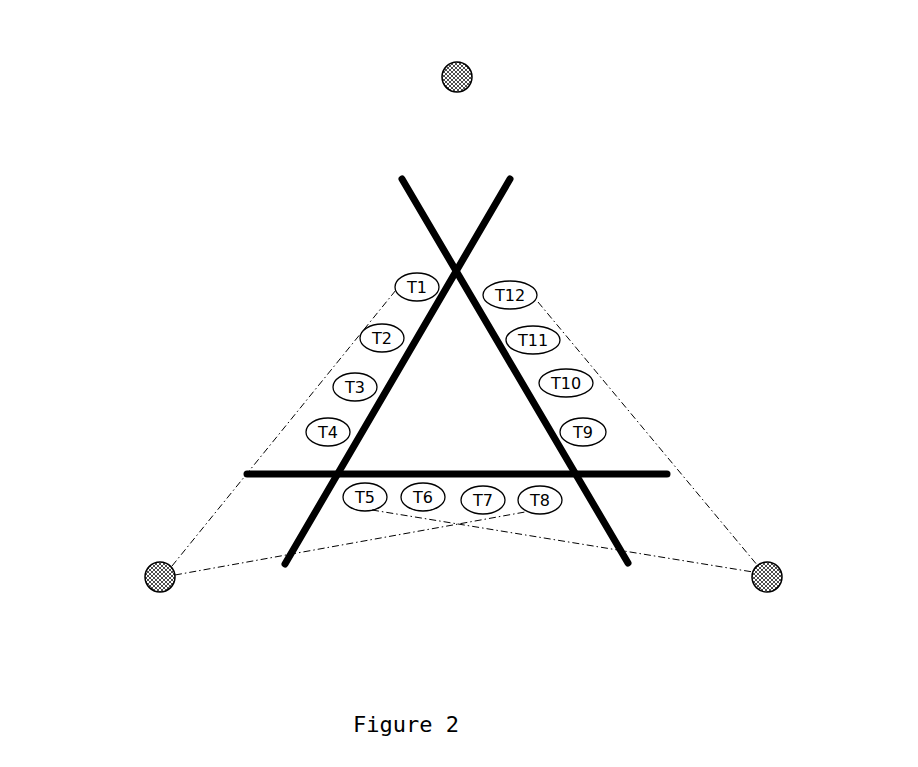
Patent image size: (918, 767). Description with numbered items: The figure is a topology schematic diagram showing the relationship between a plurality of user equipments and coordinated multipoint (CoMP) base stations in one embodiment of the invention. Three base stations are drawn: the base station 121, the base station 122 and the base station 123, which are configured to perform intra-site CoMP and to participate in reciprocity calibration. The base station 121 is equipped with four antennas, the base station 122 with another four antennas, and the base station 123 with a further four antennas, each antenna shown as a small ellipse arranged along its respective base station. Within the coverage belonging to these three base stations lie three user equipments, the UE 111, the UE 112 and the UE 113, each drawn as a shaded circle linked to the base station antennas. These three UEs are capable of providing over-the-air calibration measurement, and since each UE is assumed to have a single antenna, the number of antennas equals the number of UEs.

The UE 111 is at (146, 582).
The UE 112 is at (757, 590).
The UE 113 is at (443, 72).
The base station 121 is at (495, 213).
The base station 122 is at (667, 474).
The base station 123 is at (413, 200).